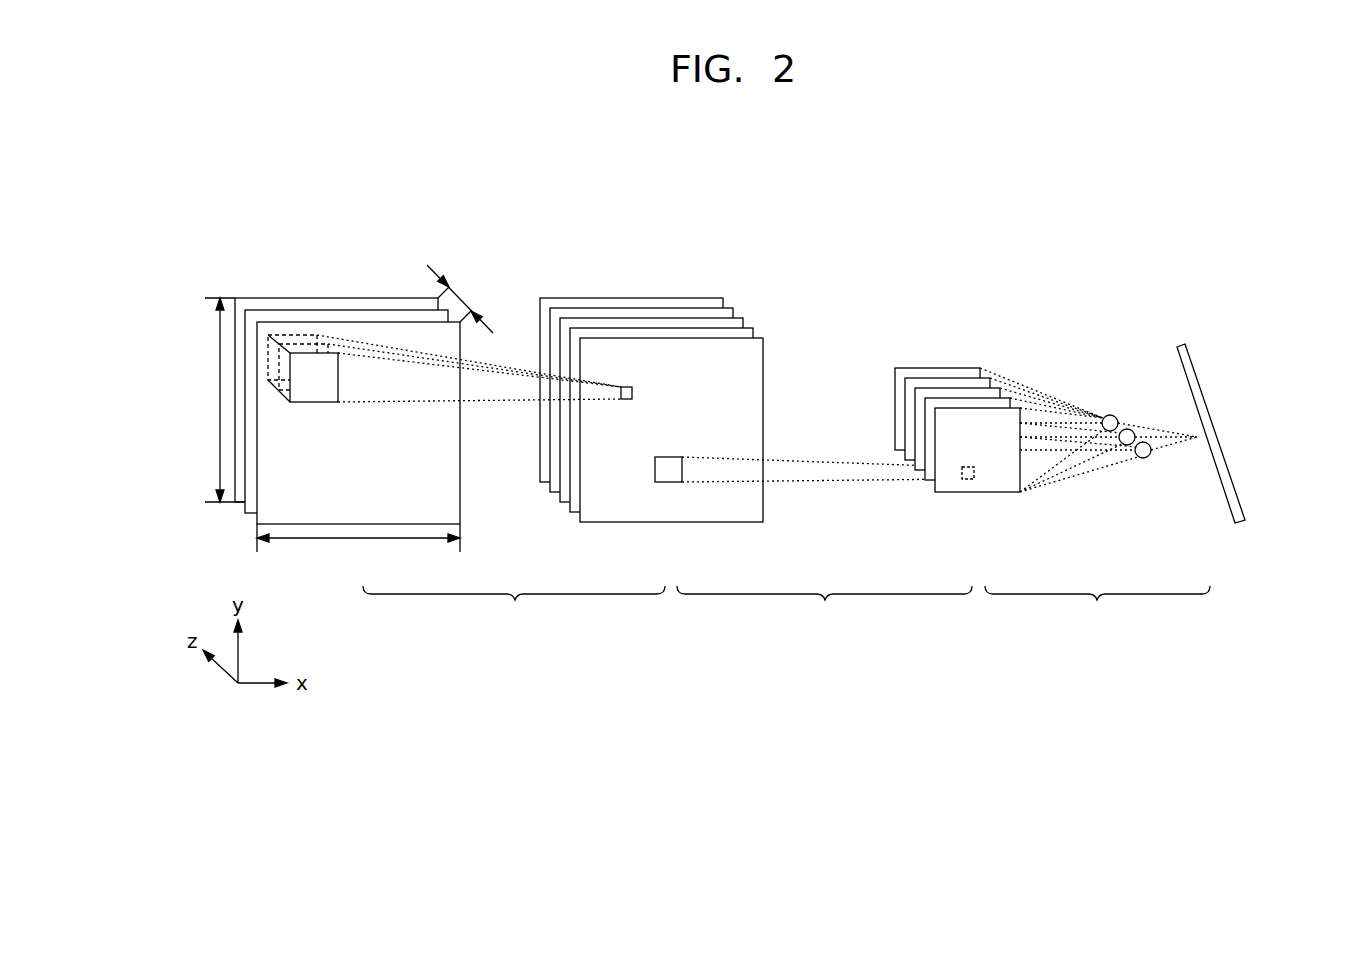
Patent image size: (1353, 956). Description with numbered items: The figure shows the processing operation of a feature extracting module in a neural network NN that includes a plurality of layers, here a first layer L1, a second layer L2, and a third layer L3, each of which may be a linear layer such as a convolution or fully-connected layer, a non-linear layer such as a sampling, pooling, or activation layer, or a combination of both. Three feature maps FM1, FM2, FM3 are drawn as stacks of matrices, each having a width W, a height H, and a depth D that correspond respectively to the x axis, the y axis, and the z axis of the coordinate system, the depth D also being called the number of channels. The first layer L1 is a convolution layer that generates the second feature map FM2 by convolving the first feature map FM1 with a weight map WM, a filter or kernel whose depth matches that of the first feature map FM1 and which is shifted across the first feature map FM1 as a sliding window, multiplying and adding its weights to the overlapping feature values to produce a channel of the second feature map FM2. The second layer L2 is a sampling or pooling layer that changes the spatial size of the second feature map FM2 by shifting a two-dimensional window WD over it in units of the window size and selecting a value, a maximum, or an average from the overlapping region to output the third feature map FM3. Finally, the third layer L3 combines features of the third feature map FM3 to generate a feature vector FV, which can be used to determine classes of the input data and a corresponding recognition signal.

The first feature map FM1 is at (495, 248).
The second feature map FM2 is at (740, 269).
The third feature map FM3 is at (995, 341).
The weight map WM is at (314, 402).
The window WD is at (667, 457).
The feature vector FV is at (1217, 386).
The neural network NN is at (1174, 221).
The height H is at (220, 400).
The width W is at (358, 546).
The depth D is at (460, 299).
The first layer L1 is at (514, 610).
The second layer L2 is at (824, 610).
The third layer L3 is at (1097, 610).